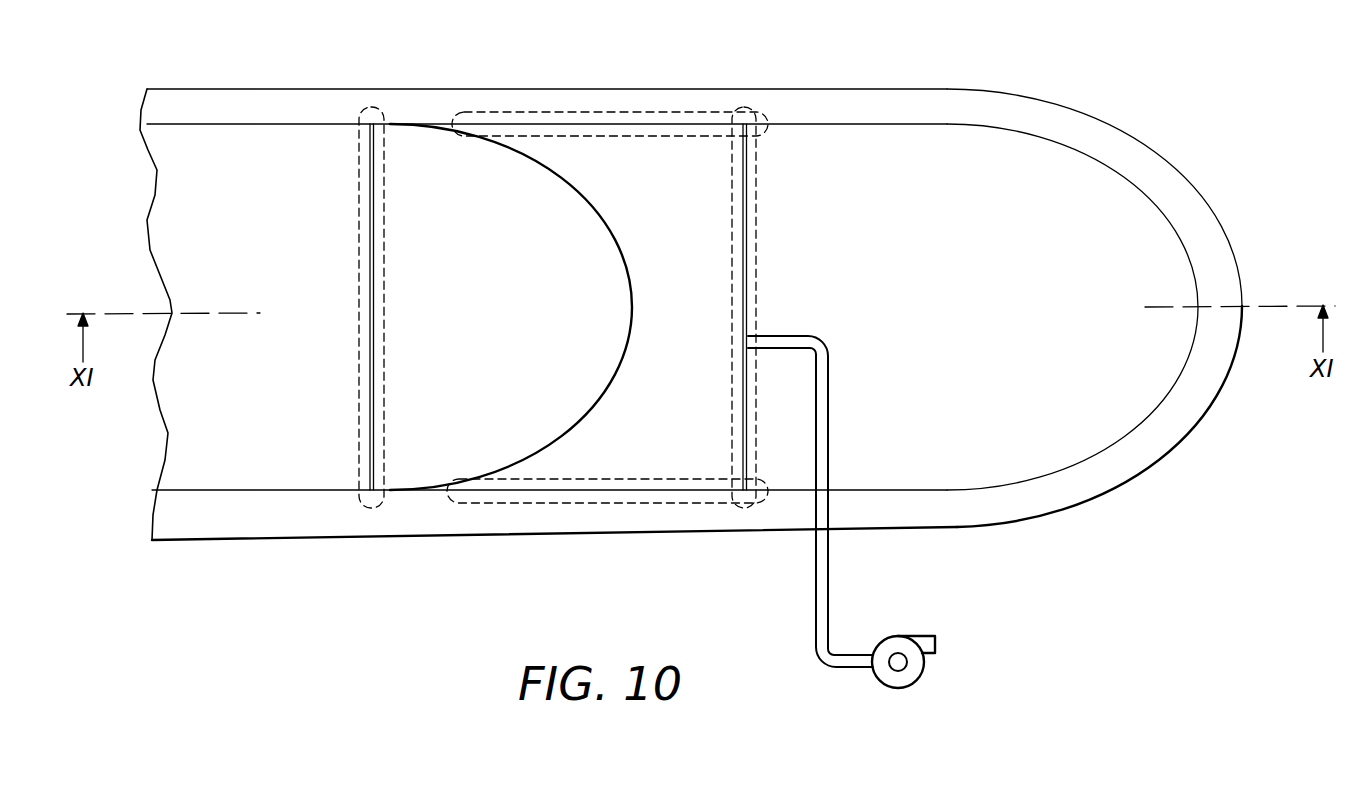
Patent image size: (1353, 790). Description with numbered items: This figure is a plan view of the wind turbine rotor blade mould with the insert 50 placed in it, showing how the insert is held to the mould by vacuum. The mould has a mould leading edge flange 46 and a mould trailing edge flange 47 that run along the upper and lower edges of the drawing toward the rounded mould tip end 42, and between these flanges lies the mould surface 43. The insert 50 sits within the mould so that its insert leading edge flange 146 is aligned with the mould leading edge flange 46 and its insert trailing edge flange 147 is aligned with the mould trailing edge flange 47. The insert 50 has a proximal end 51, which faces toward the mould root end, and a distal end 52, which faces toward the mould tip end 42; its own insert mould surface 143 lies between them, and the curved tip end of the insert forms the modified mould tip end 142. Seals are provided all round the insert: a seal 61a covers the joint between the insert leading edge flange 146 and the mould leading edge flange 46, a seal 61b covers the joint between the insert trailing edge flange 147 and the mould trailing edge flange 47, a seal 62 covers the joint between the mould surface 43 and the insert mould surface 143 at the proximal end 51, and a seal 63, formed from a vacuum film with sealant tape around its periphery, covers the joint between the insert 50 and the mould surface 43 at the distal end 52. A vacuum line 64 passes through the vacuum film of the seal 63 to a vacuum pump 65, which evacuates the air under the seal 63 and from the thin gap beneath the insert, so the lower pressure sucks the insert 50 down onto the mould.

The mould tip end 42 is at (1198, 306).
The mould surface 43 is at (319, 321).
The mould leading edge flange 46 is at (252, 100).
The mould trailing edge flange 47 is at (253, 515).
The insert 50 is at (701, 321).
The proximal end 51 is at (370, 405).
The distal end 52 is at (747, 288).
The seal 61a is at (614, 118).
The seal 61b is at (612, 503).
The seal 62 is at (358, 213).
The seal 63 is at (752, 214).
The vacuum line 64 is at (815, 588).
The vacuum pump 65 is at (893, 636).
The modified mould tip end 142 is at (632, 300).
The insert mould surface 143 is at (503, 321).
The insert leading edge flange 146 is at (514, 135).
The insert trailing edge flange 147 is at (522, 467).